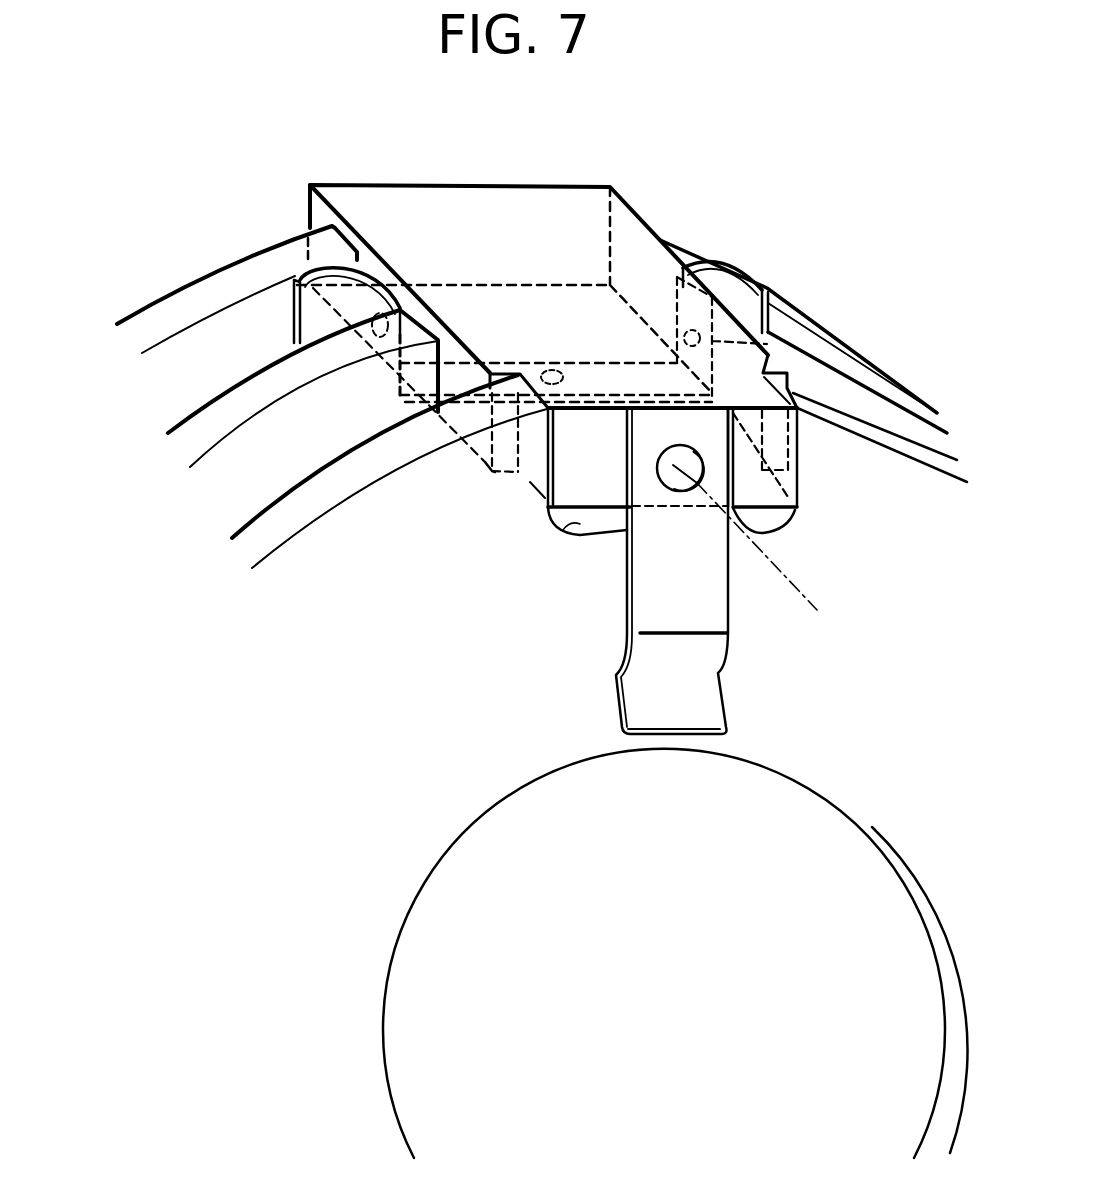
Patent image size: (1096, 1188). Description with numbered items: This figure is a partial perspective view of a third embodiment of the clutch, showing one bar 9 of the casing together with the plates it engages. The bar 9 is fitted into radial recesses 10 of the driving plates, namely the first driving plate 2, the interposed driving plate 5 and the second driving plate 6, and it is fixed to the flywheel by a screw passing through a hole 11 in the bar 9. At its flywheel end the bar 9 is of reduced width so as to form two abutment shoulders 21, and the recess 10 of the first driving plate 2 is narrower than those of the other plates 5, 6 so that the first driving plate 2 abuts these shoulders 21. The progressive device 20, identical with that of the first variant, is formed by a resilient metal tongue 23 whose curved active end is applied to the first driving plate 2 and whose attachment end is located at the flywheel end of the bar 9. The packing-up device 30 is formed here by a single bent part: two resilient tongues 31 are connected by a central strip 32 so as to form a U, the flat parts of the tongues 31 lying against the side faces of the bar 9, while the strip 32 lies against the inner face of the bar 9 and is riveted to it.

The first driving plate 2 is at (280, 522).
The driving plate 5 is at (227, 418).
The second driving plate 6 is at (172, 308).
The bar 9 is at (476, 212).
The radial recess 10 is at (573, 525).
The hole 11 is at (676, 492).
The progressive device 20 is at (697, 571).
The abutment shoulder 21 is at (519, 358).
The resilient metal tongue 23 is at (697, 680).
The packing-up device 30 is at (518, 388).
The resilient tongue 31 is at (312, 297).
The central strip 32 is at (588, 363).